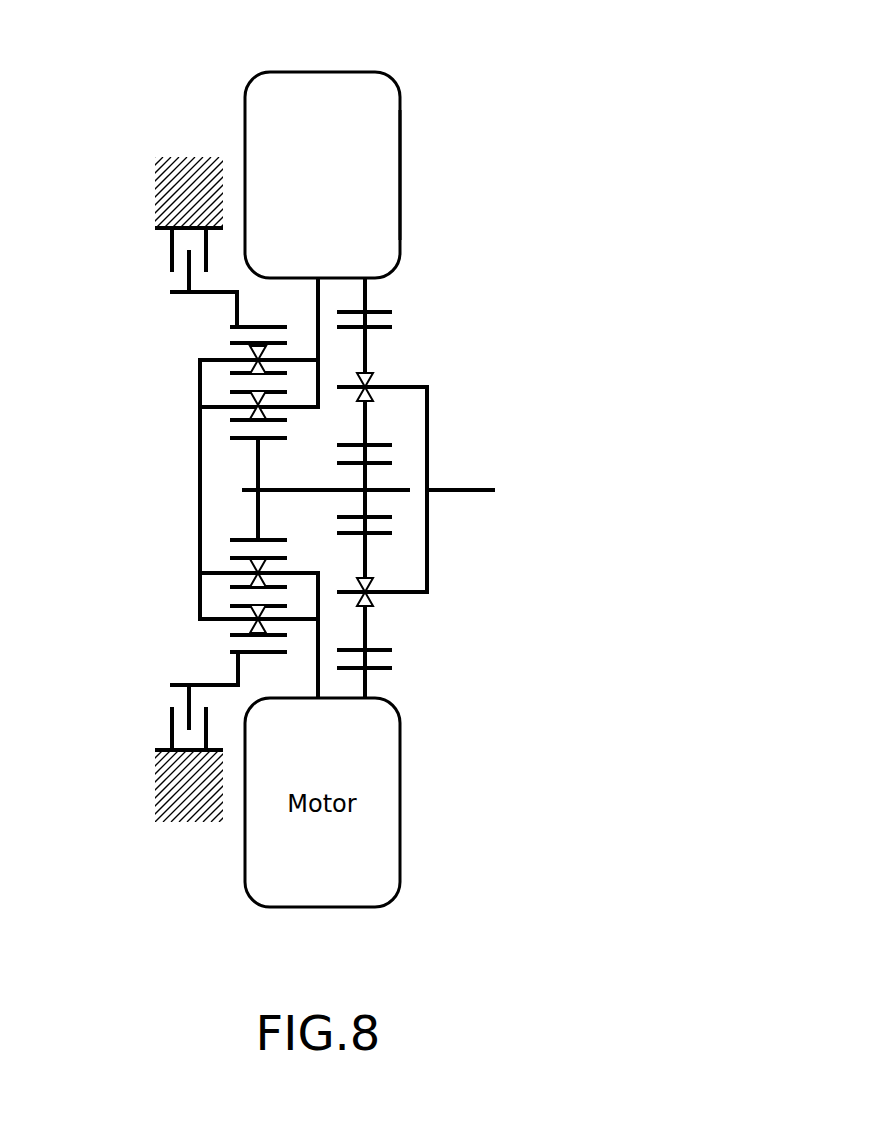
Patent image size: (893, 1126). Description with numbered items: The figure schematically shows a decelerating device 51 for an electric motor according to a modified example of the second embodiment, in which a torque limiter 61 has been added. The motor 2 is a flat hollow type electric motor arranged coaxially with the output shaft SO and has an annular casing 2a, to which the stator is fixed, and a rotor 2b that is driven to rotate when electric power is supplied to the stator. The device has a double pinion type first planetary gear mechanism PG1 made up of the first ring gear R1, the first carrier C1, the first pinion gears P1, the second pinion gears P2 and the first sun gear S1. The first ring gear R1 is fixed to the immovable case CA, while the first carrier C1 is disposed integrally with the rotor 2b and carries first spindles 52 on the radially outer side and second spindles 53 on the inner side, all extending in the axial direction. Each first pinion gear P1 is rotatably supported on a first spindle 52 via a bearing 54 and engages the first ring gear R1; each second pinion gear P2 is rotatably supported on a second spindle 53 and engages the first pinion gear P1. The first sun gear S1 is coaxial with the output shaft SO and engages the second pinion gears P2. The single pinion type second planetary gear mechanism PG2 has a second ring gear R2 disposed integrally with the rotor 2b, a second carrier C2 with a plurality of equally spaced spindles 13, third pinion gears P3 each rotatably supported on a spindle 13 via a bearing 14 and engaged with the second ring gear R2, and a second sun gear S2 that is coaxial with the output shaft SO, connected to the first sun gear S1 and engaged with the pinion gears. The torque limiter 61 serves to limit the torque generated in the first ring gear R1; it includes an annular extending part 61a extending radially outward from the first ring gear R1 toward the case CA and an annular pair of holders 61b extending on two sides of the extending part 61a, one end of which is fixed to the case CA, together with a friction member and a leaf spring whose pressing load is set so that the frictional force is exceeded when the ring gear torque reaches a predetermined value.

The motor 2 is at (397, 66).
The casing 2a is at (401, 165).
The rotor 2b is at (316, 320).
The decelerating device 51 is at (493, 76).
The first spindle 52 is at (216, 358).
The second spindle 53 is at (240, 416).
The bearing 54 is at (238, 370).
The spindle 13 is at (383, 382).
The bearing 14 is at (385, 396).
The first ring gear R1 is at (250, 327).
The first pinion gear P1 is at (238, 383).
The second pinion gear P2 is at (240, 432).
The first sun gear S1 is at (267, 440).
The first carrier C1 is at (193, 556).
The second ring gear R2 is at (392, 310).
The third pinion gear P3 is at (393, 326).
The second sun gear S2 is at (385, 467).
The second carrier C2 is at (420, 378).
The output shaft SO is at (478, 492).
The case CA is at (165, 782).
The torque limiter 61 is at (152, 727).
The extending part 61a is at (185, 703).
The holder 61b is at (168, 710).
The first planetary gear mechanism PG1 is at (185, 845).
The second planetary gear mechanism PG2 is at (408, 684).